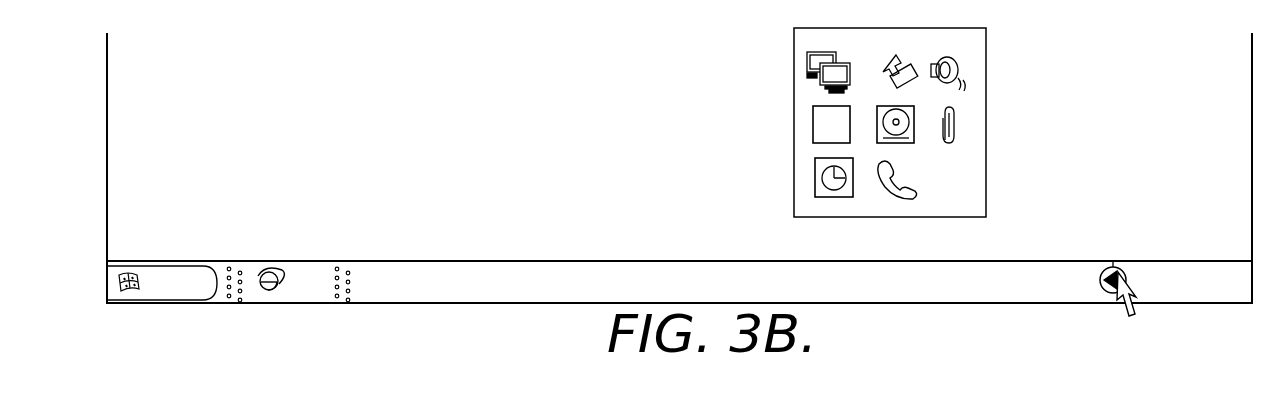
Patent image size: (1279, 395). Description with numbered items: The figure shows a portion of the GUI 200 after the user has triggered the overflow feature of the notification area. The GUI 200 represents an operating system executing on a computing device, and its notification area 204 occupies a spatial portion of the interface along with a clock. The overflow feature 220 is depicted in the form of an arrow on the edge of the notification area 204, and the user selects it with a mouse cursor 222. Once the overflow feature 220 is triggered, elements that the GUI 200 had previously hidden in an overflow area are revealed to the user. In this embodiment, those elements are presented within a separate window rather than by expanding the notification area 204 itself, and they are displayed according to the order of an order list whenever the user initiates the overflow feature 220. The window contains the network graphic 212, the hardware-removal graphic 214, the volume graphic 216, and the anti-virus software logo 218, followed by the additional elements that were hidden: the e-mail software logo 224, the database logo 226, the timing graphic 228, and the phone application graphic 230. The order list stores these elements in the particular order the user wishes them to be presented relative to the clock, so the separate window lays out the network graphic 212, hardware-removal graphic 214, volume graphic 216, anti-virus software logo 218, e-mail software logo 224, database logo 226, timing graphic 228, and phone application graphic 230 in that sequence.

The GUI 200 is at (107, 105).
The notification area 204 is at (1145, 290).
The network graphic 212 is at (828, 51).
The hardware-removal graphic 214 is at (903, 53).
The volume graphic 216 is at (951, 52).
The anti-virus software logo 218 is at (813, 127).
The overflow feature 220 is at (1103, 280).
The mouse cursor 222 is at (1122, 317).
The e-mail software logo 224 is at (914, 132).
The database logo 226 is at (962, 123).
The timing graphic 228 is at (839, 198).
The phone application graphic 230 is at (912, 200).